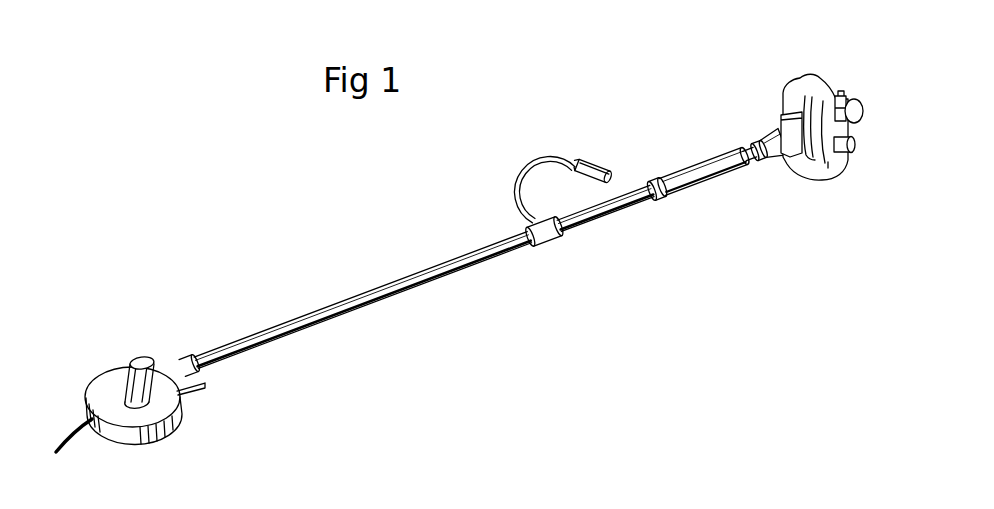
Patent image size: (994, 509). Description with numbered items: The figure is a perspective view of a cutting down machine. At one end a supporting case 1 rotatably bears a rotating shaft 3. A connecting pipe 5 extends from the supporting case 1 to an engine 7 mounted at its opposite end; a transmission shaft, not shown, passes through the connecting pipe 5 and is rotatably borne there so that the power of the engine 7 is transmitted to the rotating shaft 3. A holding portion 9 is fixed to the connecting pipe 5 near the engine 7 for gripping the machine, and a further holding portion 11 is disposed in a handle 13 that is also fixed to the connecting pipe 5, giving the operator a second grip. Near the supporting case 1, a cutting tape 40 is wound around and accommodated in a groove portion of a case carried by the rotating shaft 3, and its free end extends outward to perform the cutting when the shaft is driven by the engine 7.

The supporting case 1 is at (130, 367).
The rotating shaft 3 is at (172, 422).
The connecting pipe 5 is at (293, 320).
The engine 7 is at (790, 85).
The holding portion 9 is at (704, 178).
The holding portion 11 is at (603, 162).
The handle 13 is at (517, 190).
The cutting tape 40 is at (75, 447).